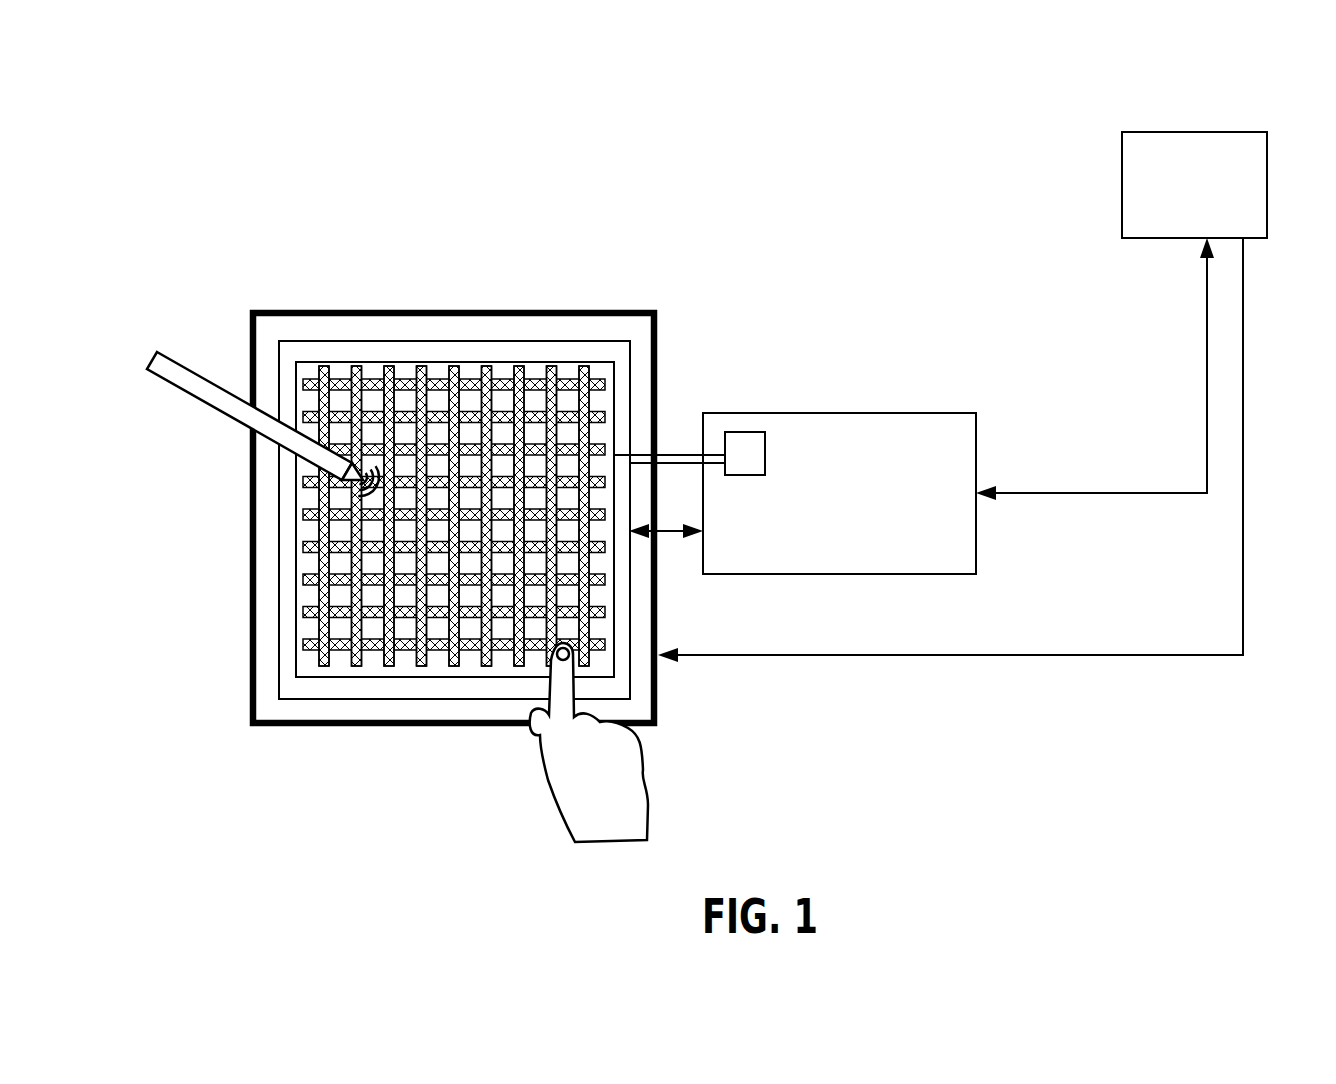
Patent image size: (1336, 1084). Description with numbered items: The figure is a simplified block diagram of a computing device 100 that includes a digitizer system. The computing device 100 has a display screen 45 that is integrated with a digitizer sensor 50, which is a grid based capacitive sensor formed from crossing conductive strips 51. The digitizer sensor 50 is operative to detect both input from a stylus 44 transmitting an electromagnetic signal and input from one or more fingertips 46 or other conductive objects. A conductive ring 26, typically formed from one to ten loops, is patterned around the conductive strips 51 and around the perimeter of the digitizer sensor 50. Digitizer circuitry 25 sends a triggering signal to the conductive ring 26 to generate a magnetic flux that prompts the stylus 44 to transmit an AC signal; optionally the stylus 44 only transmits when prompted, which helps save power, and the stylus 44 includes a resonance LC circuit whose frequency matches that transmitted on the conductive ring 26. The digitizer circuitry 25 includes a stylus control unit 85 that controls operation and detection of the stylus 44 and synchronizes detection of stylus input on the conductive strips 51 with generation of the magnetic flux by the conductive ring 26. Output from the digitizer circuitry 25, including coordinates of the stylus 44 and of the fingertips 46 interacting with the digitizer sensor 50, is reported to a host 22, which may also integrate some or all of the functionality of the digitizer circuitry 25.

The computing device 100 is at (448, 220).
The host 22 is at (1170, 132).
The digitizer circuitry 25 is at (912, 413).
The conductive ring 26 is at (615, 390).
The stylus 44 is at (222, 387).
The display screen 45 is at (575, 310).
The fingertip 46 is at (550, 662).
The digitizer sensor 50 is at (632, 438).
The conductive strips 51 is at (527, 368).
The stylus control unit 85 is at (752, 432).